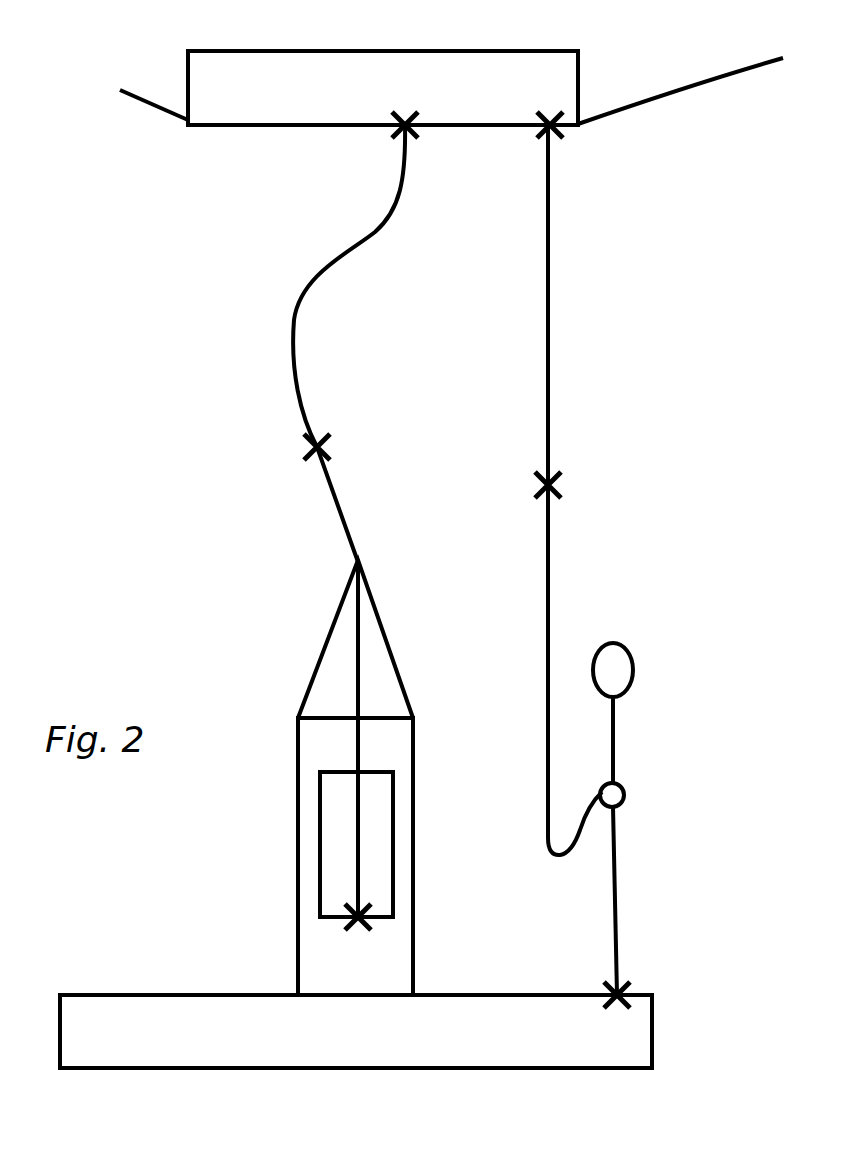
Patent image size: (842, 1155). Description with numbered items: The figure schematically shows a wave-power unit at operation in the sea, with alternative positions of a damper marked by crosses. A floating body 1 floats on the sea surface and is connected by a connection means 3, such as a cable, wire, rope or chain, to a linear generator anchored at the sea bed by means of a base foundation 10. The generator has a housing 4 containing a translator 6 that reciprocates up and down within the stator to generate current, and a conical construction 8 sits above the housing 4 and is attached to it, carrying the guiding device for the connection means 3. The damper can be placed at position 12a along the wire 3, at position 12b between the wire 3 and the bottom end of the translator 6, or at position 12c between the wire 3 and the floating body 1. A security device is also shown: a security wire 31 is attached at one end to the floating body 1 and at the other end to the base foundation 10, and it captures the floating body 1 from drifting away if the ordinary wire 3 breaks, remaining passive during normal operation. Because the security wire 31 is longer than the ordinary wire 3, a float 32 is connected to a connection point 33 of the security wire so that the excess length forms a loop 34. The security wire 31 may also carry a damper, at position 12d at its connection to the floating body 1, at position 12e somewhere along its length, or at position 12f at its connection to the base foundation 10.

The floating body 1 is at (480, 62).
The connection means 3 is at (303, 391).
The housing 4 is at (413, 855).
The translator 6 is at (383, 800).
The conical construction 8 is at (388, 647).
The base foundation 10 is at (345, 1050).
The damper position 12a is at (327, 445).
The damper position 12b is at (350, 918).
The damper position 12c is at (388, 130).
The damper position 12d is at (560, 134).
The damper position 12e is at (556, 485).
The damper position 12f is at (620, 983).
The security wire 31 is at (550, 370).
The float 32 is at (622, 660).
The connection point 33 is at (615, 795).
The loop 34 is at (553, 860).